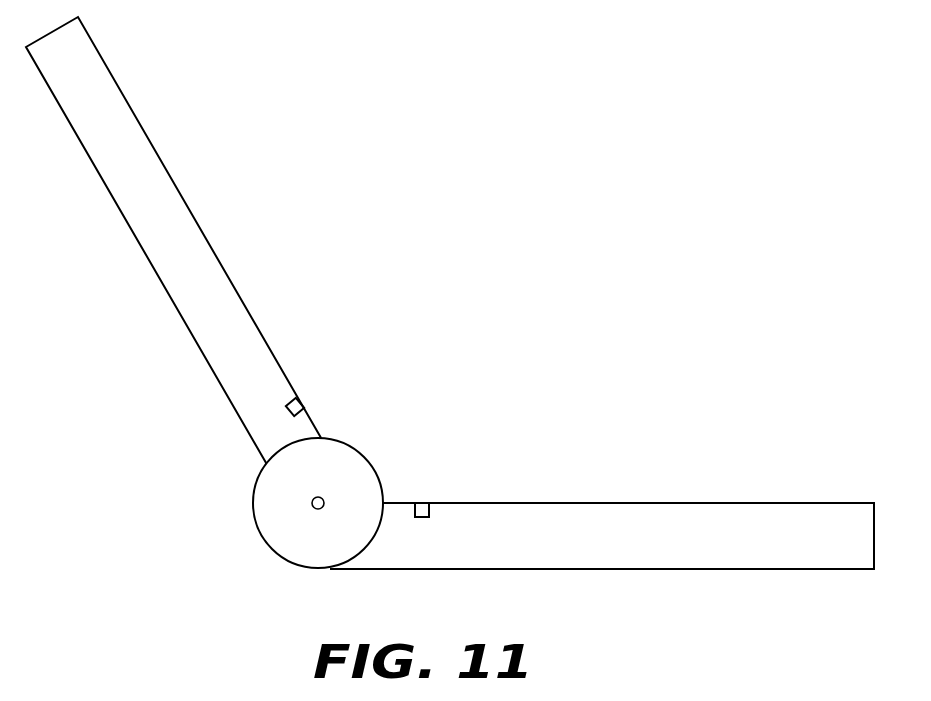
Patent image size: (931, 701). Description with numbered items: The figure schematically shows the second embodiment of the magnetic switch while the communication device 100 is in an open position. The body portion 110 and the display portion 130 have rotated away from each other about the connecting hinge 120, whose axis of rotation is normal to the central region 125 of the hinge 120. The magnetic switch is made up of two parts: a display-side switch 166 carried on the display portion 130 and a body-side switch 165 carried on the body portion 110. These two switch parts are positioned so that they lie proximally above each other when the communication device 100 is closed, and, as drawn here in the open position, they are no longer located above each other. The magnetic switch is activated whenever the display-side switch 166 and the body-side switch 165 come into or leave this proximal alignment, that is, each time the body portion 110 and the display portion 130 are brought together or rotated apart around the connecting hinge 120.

The communication device 100 is at (436, 367).
The body portion 110 is at (753, 512).
The connecting hinge 120 is at (255, 485).
The central region 125 is at (312, 504).
The display portion 130 is at (130, 210).
The body-side switch 165 is at (422, 507).
The display-side switch 166 is at (300, 405).